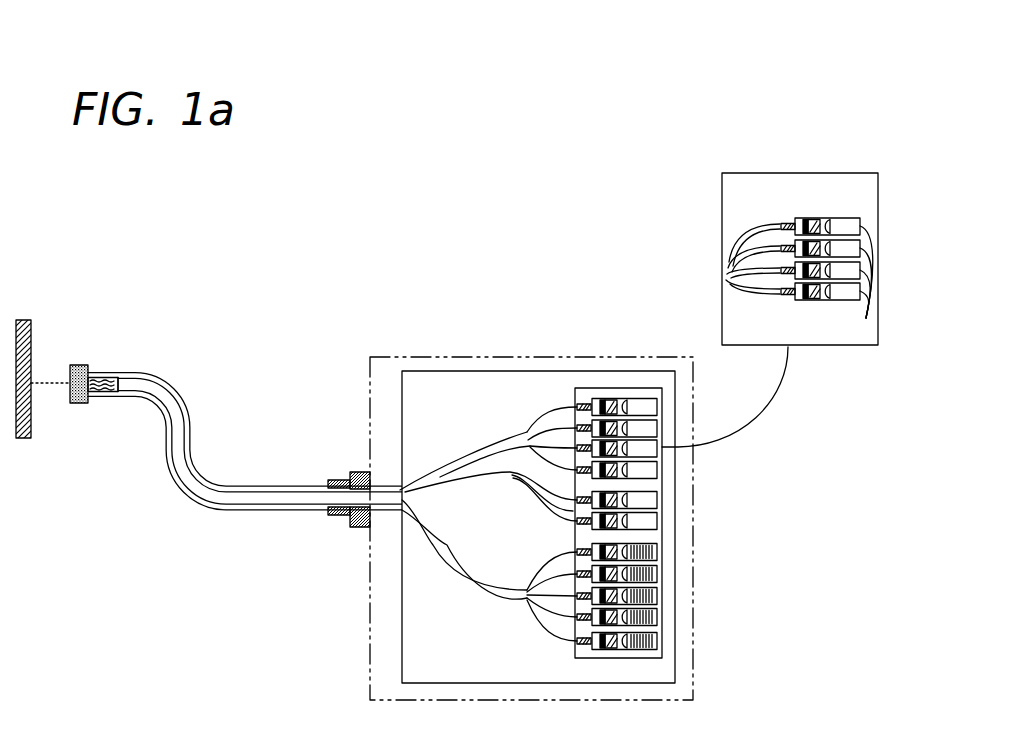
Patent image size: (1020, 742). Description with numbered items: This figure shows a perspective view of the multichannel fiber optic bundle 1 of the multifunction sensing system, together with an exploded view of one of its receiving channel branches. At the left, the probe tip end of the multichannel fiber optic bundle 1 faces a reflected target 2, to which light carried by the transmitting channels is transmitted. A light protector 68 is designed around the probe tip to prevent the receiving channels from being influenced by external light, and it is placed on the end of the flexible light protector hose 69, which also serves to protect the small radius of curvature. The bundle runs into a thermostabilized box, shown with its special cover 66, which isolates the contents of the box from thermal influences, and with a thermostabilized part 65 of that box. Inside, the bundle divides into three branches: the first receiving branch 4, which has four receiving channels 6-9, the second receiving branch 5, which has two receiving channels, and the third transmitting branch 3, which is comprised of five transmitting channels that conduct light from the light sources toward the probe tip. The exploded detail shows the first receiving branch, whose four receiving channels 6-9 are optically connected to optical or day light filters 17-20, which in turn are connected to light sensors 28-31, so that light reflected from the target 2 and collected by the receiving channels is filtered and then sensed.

The multichannel fiber optic bundle 1 is at (245, 411).
The reflected target 2 is at (31, 335).
The third transmitting branch 3 is at (472, 577).
The first receiving branch 4 is at (444, 468).
The second receiving branch 5 is at (447, 480).
The thermostabilized part 65 is at (585, 396).
The special cover 66 is at (459, 409).
The light protector 68 is at (85, 366).
The flexible light protector hose 69 is at (187, 415).
The receiving channels of the first branch 6-9 is at (763, 268).
The optical filters 17-20 is at (803, 218).
The light sensors 28-31 is at (836, 283).